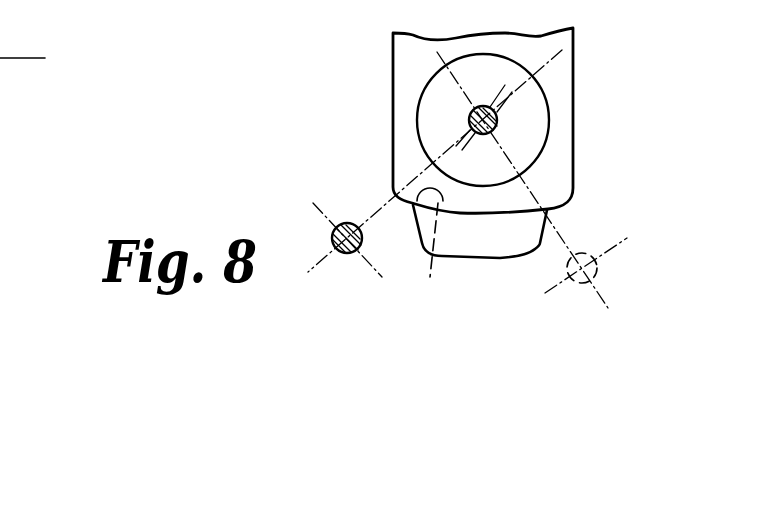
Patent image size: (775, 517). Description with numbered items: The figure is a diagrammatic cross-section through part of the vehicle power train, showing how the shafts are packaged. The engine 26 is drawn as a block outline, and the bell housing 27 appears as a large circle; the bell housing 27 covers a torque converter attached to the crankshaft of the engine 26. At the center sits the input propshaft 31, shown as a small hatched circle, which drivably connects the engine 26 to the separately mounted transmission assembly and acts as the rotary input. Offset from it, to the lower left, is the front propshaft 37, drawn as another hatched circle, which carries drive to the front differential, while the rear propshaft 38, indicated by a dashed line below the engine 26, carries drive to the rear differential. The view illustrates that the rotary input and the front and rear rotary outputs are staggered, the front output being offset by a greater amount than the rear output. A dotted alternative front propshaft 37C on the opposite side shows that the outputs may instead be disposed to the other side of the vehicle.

The engine 26 is at (403, 64).
The bell housing 27 is at (530, 100).
The input propshaft 31 is at (498, 120).
The front propshaft 37 is at (338, 226).
The alternative front propshaft 37C is at (596, 258).
The rear propshaft 38 is at (430, 255).